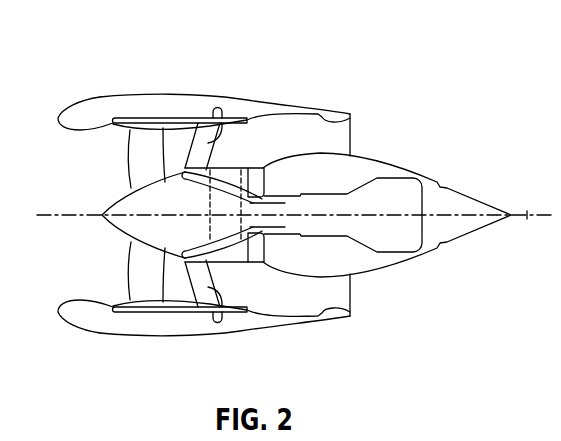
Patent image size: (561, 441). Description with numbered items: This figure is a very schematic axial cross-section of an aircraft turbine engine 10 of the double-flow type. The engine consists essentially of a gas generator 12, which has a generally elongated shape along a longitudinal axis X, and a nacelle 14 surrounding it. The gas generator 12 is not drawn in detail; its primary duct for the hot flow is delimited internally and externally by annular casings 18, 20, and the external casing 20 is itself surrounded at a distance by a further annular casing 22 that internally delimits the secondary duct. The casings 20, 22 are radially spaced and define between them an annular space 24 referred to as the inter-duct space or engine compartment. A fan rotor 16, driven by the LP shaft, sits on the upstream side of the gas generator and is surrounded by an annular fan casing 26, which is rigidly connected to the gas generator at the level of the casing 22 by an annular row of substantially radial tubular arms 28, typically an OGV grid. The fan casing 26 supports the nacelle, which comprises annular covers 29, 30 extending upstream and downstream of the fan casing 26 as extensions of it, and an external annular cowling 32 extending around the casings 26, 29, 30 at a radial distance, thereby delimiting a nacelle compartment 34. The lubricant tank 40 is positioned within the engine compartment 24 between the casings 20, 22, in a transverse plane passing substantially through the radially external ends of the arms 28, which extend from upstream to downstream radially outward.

The turbine engine 10 is at (406, 84).
The gas generator 12 is at (420, 161).
The nacelle 14 is at (85, 92).
The fan rotor 16 is at (122, 138).
The annular casing 18 is at (267, 166).
The annular casing 20 is at (250, 167).
The annular casing 22 is at (232, 167).
The annular space 24 is at (227, 273).
The annular fan casing 26 is at (198, 122).
The tubular arms 28 is at (220, 117).
The annular cover 29 is at (67, 107).
The annular cover 30 is at (351, 123).
The external annular cowling 32 is at (182, 93).
The nacelle compartment 34 is at (114, 324).
The lubricant tank 40 is at (258, 225).
The longitudinal axis X is at (527, 218).